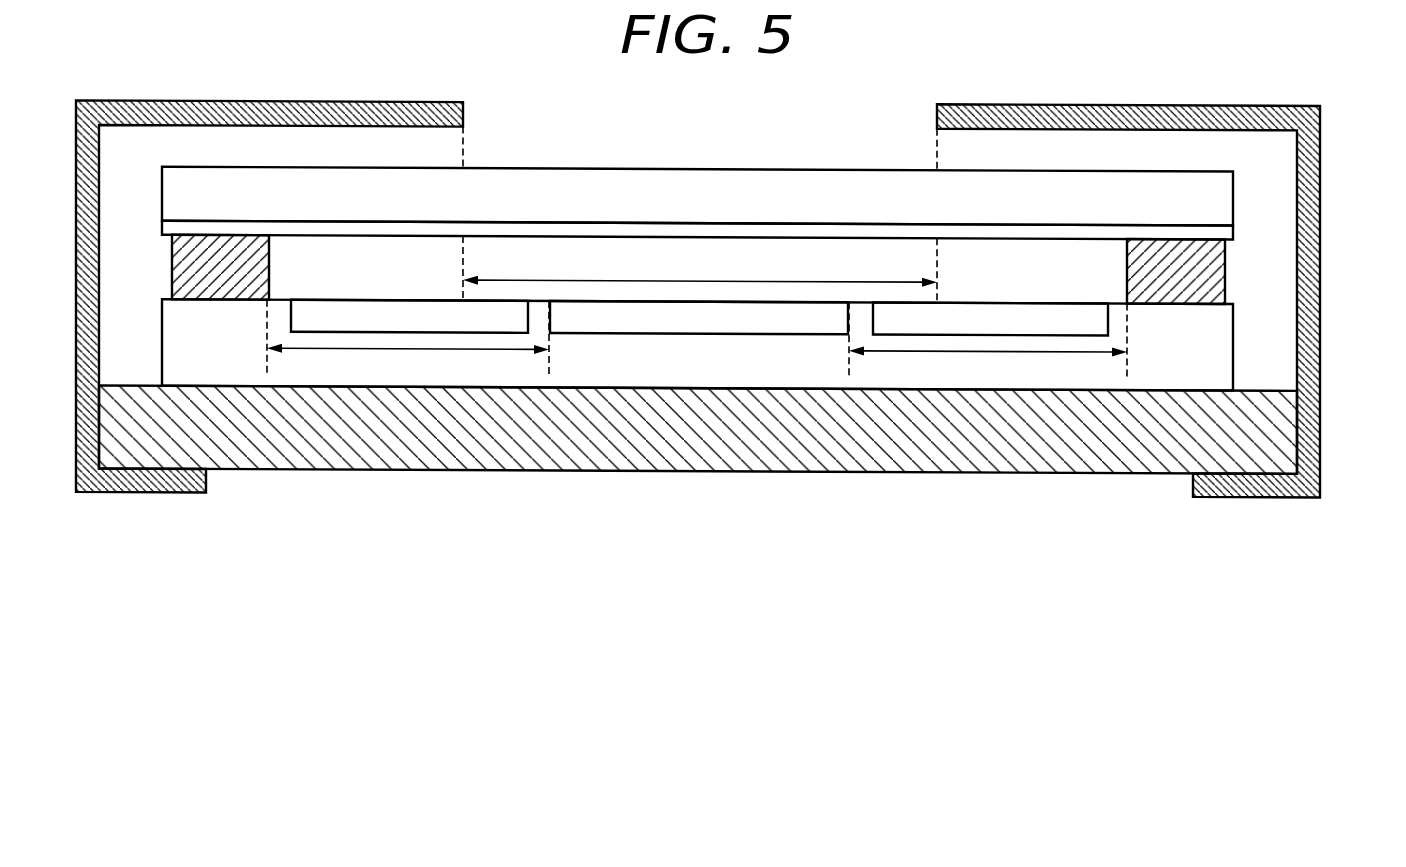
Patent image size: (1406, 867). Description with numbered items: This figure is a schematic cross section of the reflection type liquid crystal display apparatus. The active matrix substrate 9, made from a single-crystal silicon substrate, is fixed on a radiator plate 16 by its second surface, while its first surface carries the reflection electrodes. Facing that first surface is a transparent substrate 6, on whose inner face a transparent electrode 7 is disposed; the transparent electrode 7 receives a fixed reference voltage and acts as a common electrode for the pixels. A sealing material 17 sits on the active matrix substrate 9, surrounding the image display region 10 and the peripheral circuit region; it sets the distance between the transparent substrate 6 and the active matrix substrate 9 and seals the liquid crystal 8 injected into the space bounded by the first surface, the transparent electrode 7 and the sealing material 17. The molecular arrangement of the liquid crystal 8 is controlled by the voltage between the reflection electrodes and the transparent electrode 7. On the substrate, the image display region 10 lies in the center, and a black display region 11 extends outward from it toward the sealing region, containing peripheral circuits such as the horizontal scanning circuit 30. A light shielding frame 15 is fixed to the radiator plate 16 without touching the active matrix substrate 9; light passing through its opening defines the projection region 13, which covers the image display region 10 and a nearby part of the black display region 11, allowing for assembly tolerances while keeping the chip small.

The transparent substrate 6 is at (1232, 194).
The transparent electrode 7 is at (1232, 228).
The liquid crystal 8 is at (1108, 248).
The active matrix substrate 9 is at (1234, 340).
The image display region 10 is at (699, 316).
The black display region 11 is at (908, 352).
The projection region 13 is at (700, 215).
The light shielding frame 15 is at (1320, 122).
The radiator plate 16 is at (1133, 447).
The sealing material 17 is at (172, 261).
The horizontal scanning circuit 30 is at (699, 317).